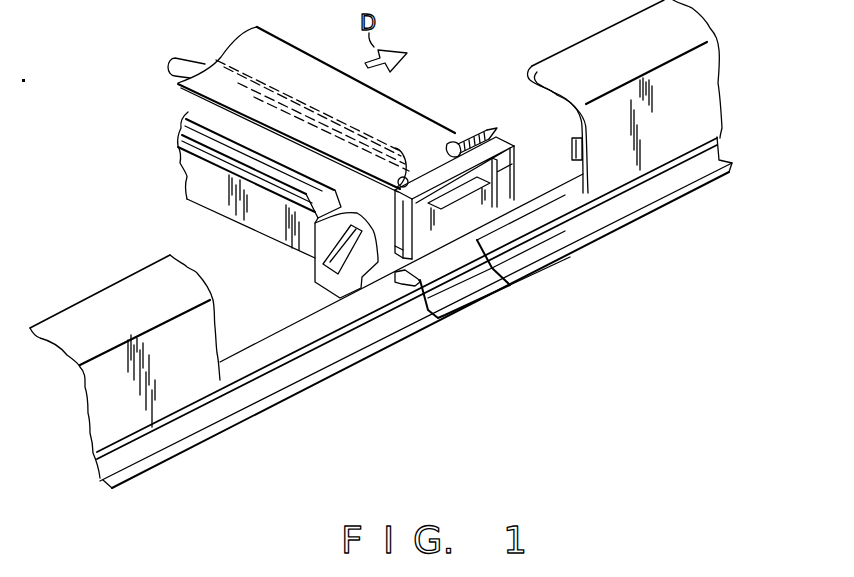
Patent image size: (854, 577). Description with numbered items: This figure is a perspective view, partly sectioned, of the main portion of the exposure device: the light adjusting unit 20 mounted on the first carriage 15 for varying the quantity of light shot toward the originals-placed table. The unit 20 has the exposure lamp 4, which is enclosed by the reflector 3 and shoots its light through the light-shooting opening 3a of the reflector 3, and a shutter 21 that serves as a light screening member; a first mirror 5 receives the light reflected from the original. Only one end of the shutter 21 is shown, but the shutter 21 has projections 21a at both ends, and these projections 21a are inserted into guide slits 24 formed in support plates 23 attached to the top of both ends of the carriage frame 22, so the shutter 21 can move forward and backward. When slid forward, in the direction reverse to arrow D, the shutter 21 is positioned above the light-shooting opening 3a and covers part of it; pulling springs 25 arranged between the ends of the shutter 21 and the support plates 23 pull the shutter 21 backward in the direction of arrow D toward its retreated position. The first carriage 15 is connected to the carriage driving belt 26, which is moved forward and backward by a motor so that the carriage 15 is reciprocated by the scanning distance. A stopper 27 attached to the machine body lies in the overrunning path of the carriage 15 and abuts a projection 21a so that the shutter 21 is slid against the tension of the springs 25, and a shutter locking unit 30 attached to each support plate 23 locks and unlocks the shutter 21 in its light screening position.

The reflector 3 is at (208, 138).
The light-shooting opening 3a is at (282, 152).
The exposure lamp 4 is at (205, 66).
The first mirror 5 is at (216, 187).
The first carriage 15 is at (550, 247).
The light adjusting unit 20 is at (420, 107).
The shutter 21 is at (312, 78).
The projections 21a is at (494, 152).
The carriage frame 22 is at (404, 286).
The support plates 23 is at (456, 163).
The guide slits 24 is at (500, 178).
The pulling springs 25 is at (468, 136).
The carriage driving belt 26 is at (652, 208).
The stoppers 27 is at (572, 128).
The shutter locking unit 30 is at (495, 190).